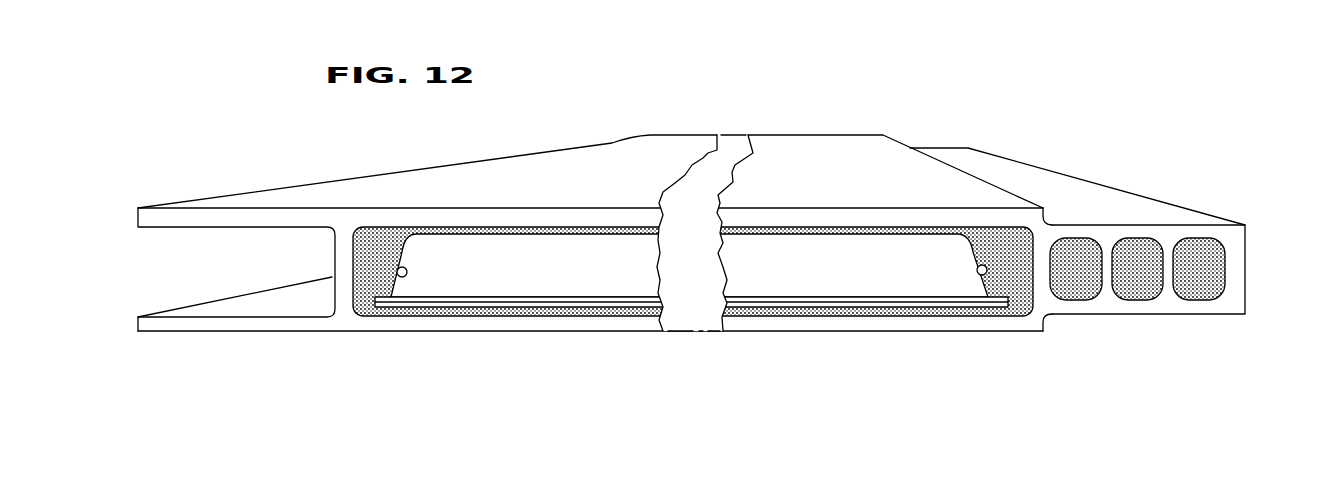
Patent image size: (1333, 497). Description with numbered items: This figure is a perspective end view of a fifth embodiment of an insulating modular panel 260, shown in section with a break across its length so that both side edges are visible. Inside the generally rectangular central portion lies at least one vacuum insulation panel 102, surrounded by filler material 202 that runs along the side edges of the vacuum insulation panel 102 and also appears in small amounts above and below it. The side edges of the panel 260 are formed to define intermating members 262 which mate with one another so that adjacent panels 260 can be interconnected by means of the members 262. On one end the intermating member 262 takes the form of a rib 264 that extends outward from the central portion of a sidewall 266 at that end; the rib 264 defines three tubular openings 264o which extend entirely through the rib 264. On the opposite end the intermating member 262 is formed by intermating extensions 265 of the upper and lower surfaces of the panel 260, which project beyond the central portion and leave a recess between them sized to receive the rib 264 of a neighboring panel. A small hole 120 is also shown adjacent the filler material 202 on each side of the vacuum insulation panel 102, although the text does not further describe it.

The insulating panel 260 is at (822, 113).
The intermating extensions 265 is at (273, 200).
The intermating members 262 is at (1118, 187).
The filler material 202 is at (390, 246).
The vacuum insulation panel 102 is at (555, 280).
The hole 120 is at (404, 271).
The sidewall 266 is at (1042, 266).
The rib 264 is at (1189, 309).
The tubular openings 264o is at (1135, 292).